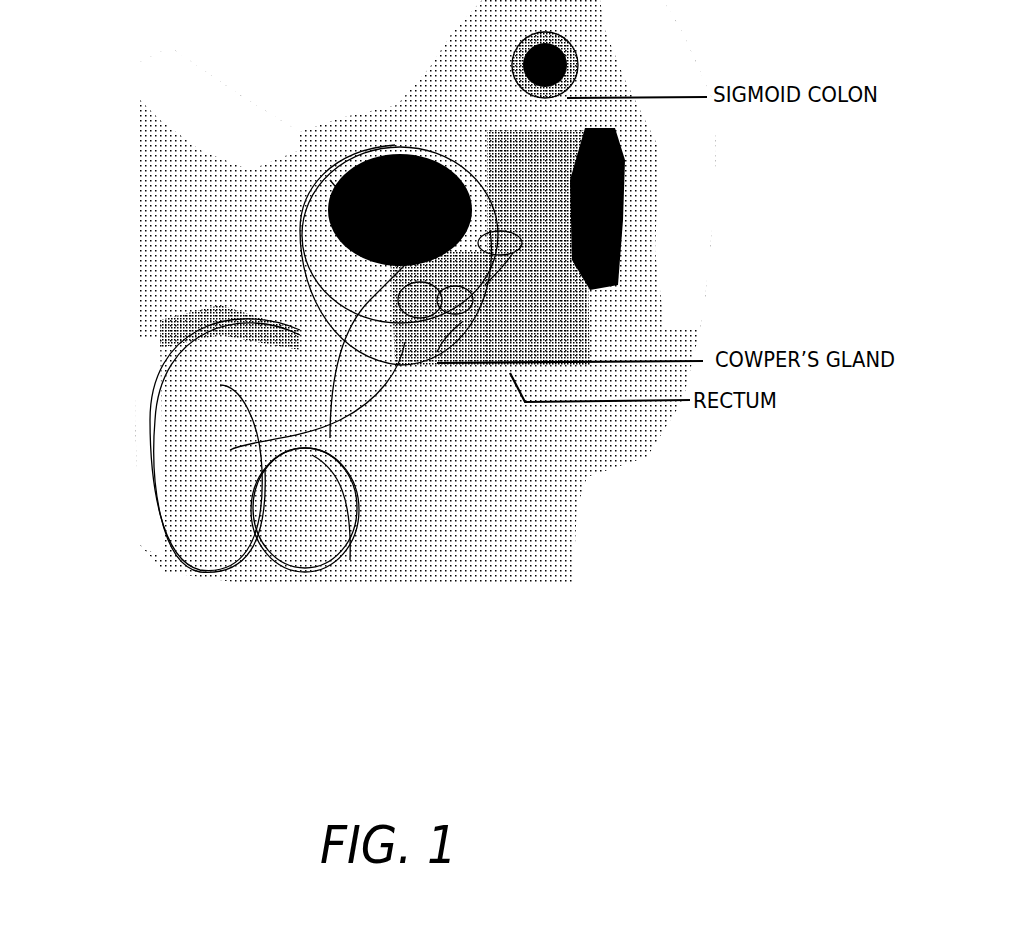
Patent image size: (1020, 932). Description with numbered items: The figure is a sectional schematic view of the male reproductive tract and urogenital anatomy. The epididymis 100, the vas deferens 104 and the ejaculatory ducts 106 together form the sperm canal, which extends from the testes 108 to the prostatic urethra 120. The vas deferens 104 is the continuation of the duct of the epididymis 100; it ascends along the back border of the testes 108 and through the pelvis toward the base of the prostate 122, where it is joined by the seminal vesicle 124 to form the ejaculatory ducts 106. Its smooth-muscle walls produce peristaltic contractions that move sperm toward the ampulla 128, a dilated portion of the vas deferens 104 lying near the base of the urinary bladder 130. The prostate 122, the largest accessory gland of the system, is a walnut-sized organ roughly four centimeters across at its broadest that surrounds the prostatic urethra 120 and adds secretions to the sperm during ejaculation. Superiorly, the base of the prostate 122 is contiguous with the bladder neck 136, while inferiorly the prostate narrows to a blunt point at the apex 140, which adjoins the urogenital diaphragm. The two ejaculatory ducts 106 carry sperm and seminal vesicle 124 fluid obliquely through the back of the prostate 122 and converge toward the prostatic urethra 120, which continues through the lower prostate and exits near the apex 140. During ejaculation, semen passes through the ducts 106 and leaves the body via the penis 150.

The epididymis 100 is at (320, 487).
The vas deferens 104 is at (462, 206).
The ejaculatory ducts 106 is at (463, 298).
The testes 108 is at (298, 540).
The prostatic urethra 120 is at (415, 304).
The prostate 122 is at (462, 322).
The seminal vesicle 124 is at (513, 254).
The ampulla 128 is at (487, 238).
The urinary bladder 130 is at (368, 161).
The bladder neck 136 is at (246, 226).
The apex 140 is at (405, 342).
The penis 150 is at (162, 394).